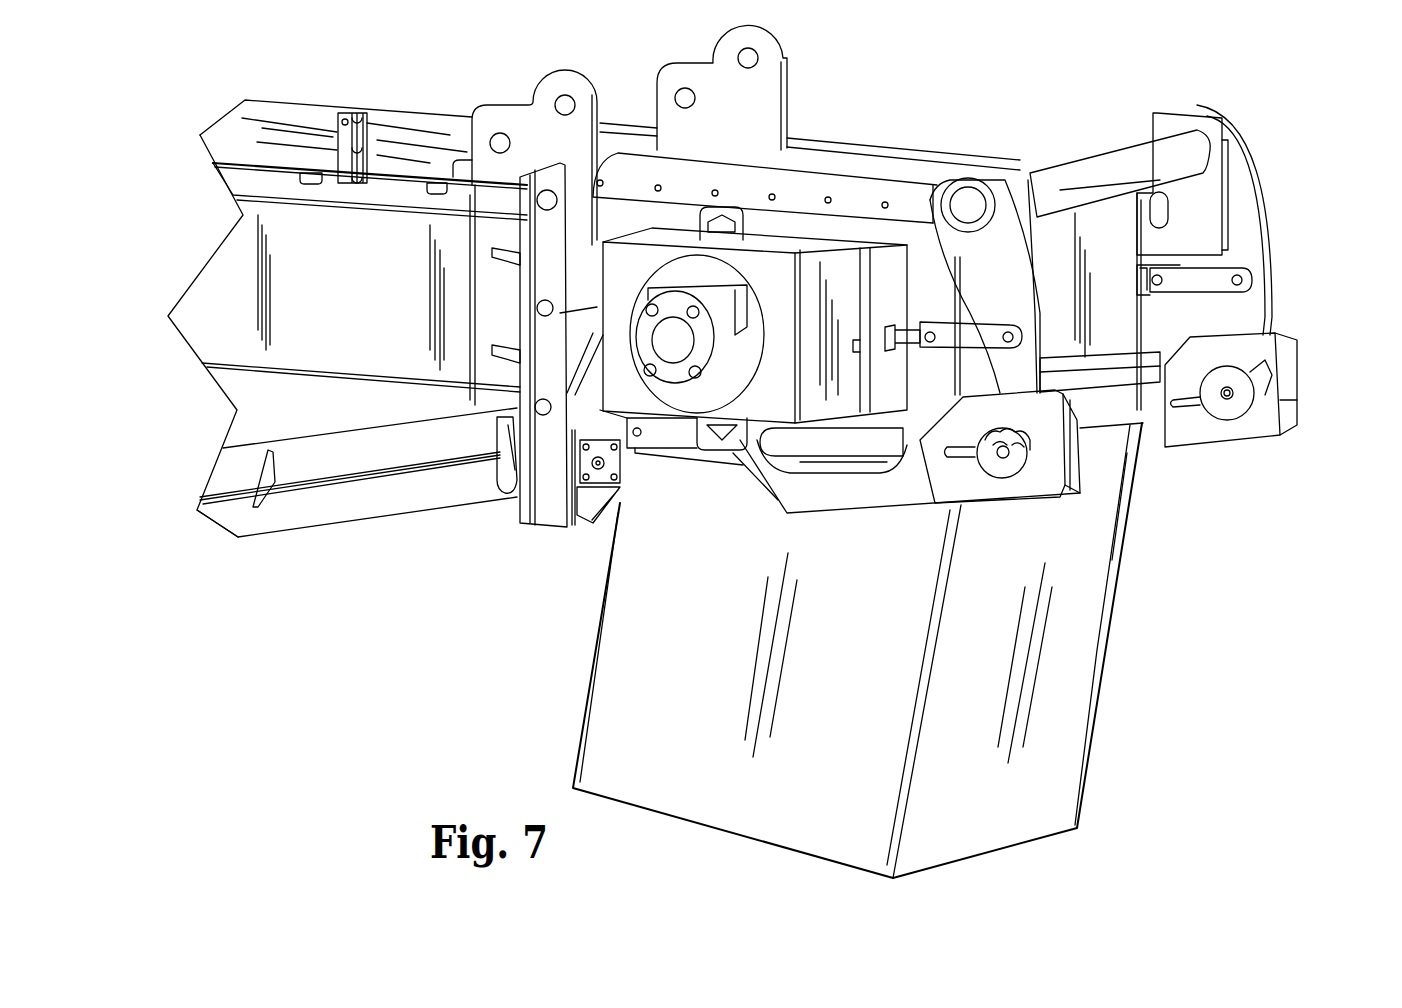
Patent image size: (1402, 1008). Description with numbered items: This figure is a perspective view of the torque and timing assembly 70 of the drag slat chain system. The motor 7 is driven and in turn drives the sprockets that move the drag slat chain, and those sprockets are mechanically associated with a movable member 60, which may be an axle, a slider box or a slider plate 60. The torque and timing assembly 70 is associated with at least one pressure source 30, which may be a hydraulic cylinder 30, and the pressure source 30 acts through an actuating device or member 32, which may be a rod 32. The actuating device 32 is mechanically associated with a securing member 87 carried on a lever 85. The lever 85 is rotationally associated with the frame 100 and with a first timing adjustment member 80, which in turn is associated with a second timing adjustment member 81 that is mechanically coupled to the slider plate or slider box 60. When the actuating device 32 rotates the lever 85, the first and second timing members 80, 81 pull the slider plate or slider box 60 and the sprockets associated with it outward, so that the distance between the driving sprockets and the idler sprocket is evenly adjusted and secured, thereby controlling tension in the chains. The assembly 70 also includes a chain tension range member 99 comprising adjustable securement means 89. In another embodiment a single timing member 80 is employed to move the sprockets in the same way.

The motor 7 is at (665, 290).
The frame 100 is at (795, 180).
The movable member 60 is at (760, 258).
The torque and timing assembly 70 is at (1272, 159).
The lever 85 is at (1245, 215).
The second timing adjustment member 81 is at (1200, 283).
The first timing adjustment member 80 is at (1150, 292).
The securing member 87 is at (1225, 405).
The adjustable securement means 89 is at (1265, 395).
The actuating device 32 is at (905, 447).
The pressure source 30 is at (863, 453).
The chain tension range member 99 is at (825, 495).